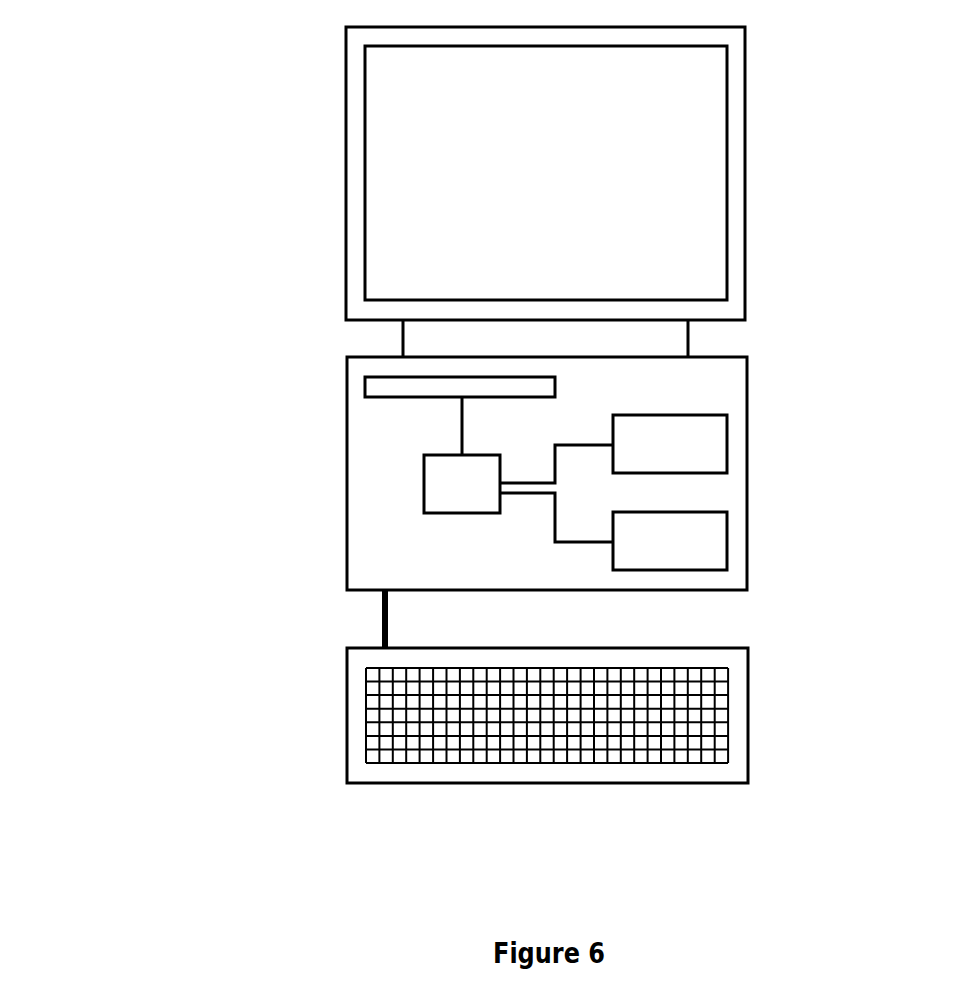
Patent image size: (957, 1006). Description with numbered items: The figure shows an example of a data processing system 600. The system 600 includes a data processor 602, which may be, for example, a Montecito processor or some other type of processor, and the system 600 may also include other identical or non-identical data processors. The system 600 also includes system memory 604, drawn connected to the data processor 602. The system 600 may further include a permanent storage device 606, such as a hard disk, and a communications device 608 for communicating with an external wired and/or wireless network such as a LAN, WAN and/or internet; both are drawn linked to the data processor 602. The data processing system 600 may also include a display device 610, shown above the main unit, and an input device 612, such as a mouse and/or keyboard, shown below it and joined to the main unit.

The data processing system 600 is at (464, 405).
The data processor 602 is at (421, 488).
The system memory 604 is at (372, 390).
The permanent storage device 606 is at (710, 440).
The communications device 608 is at (710, 542).
The display device 610 is at (735, 205).
The input device 612 is at (742, 716).